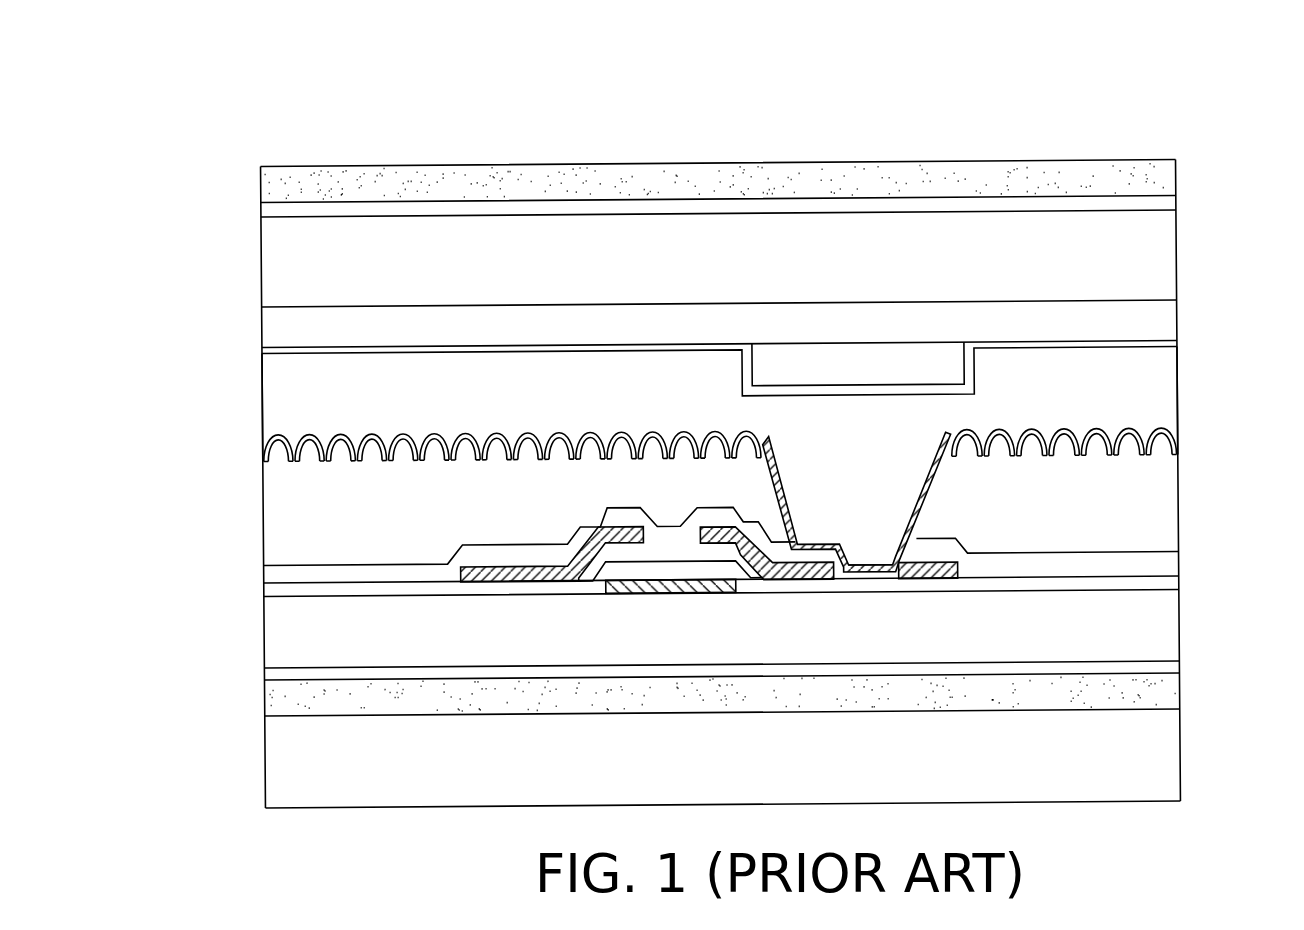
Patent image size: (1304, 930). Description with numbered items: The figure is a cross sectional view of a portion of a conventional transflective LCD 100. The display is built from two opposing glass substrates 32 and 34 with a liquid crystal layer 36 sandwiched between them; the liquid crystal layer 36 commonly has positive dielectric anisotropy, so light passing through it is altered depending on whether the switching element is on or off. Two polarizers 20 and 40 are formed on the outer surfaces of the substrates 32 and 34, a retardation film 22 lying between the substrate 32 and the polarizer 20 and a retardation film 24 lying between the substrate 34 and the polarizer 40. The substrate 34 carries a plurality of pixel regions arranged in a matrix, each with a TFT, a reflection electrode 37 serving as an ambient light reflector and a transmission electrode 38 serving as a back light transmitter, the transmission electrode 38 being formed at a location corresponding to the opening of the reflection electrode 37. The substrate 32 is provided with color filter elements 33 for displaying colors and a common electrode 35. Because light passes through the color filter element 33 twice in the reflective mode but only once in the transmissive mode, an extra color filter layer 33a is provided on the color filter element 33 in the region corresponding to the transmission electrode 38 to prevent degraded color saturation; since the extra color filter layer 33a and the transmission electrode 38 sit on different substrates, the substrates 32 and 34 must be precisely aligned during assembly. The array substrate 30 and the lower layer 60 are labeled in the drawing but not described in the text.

The transflective LCD 100 is at (127, 119).
The polarizer 20 is at (1168, 178).
The retardation film 22 is at (1170, 202).
The retardation film 24 is at (280, 673).
The array substrate 30 is at (1178, 208).
The glass substrate 32 is at (272, 255).
The color filter element 33 is at (276, 325).
The extra color filter layer 33a is at (858, 363).
The glass substrate 34 is at (285, 641).
The common electrode 35 is at (266, 350).
The liquid crystal layer 36 is at (272, 398).
The reflection electrode 37 is at (1062, 430).
The transmission electrode 38 is at (862, 573).
The polarizer 40 is at (1178, 695).
The backlight / lower layer 60 is at (1180, 748).